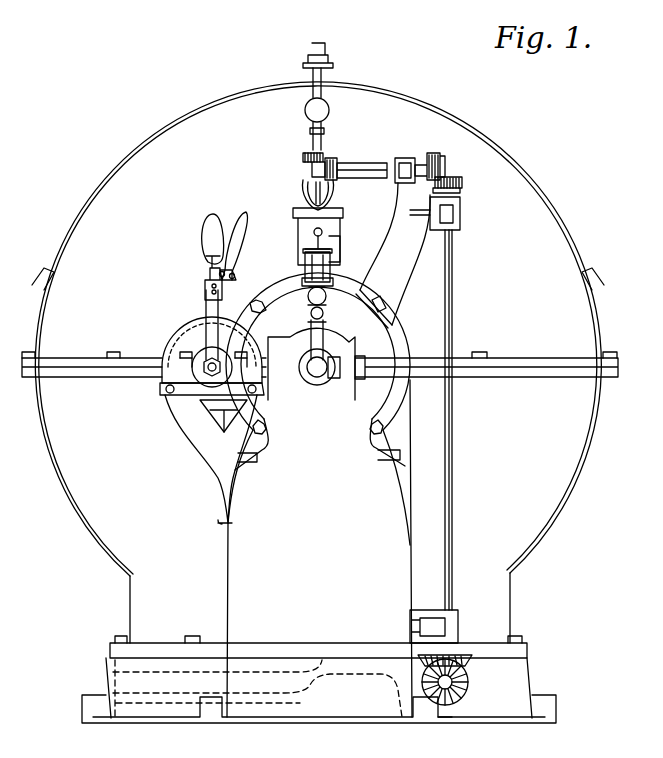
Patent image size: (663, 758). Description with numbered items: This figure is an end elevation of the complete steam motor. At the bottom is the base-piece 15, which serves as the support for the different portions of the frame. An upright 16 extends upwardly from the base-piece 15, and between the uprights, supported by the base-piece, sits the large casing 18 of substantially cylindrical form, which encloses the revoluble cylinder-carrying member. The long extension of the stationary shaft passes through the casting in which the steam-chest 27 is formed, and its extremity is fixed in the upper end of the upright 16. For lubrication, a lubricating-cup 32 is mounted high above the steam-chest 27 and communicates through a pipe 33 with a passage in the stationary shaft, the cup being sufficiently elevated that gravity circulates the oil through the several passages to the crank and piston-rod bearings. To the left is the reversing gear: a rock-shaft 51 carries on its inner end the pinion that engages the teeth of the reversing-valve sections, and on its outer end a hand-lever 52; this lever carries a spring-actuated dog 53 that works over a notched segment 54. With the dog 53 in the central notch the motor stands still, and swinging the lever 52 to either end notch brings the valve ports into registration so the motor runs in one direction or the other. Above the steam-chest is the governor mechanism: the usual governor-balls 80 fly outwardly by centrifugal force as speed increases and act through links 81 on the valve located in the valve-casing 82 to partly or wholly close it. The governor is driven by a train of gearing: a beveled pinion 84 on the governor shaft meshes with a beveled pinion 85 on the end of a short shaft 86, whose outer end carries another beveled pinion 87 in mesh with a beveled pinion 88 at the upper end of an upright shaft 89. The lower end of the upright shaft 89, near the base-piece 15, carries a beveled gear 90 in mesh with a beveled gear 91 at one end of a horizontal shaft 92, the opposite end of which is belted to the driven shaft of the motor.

The base-piece 15 is at (530, 668).
The upright 16 is at (235, 596).
The casing 18 is at (560, 230).
The steam-chest 27 is at (360, 403).
The lubricating-cup 32 is at (335, 275).
The pipe 33 is at (328, 318).
The rock-shaft 51 is at (210, 372).
The hand-lever 52 is at (208, 244).
The spring-actuated dog 53 is at (244, 236).
The notched segment 54 is at (165, 350).
The governor-balls 80 is at (330, 110).
The links 81 is at (312, 88).
The valve-casing 82 is at (343, 222).
The beveled pinion 84 is at (308, 157).
The beveled pinion 85 is at (340, 158).
The short shaft 86 is at (400, 155).
The beveled pinion 87 is at (442, 158).
The beveled pinion 88 is at (462, 182).
The upright shaft 89 is at (452, 278).
The beveled gear 90 is at (460, 650).
The beveled gear 91 is at (468, 684).
The horizontal shaft 92 is at (450, 700).